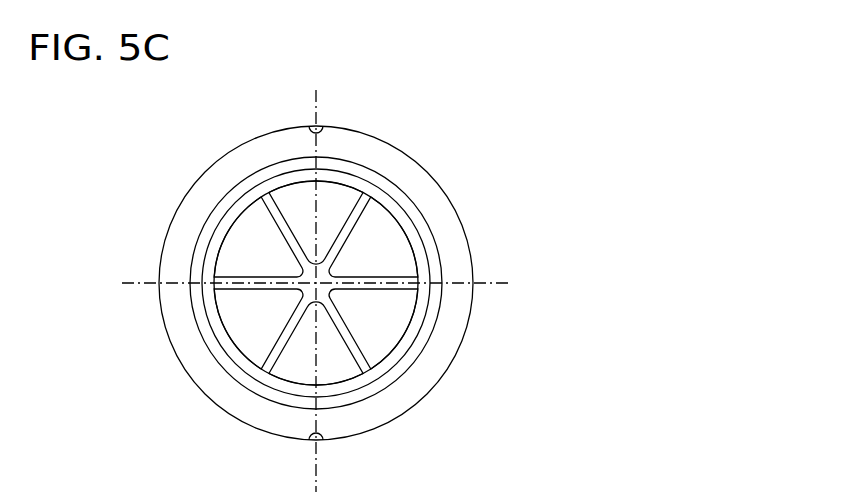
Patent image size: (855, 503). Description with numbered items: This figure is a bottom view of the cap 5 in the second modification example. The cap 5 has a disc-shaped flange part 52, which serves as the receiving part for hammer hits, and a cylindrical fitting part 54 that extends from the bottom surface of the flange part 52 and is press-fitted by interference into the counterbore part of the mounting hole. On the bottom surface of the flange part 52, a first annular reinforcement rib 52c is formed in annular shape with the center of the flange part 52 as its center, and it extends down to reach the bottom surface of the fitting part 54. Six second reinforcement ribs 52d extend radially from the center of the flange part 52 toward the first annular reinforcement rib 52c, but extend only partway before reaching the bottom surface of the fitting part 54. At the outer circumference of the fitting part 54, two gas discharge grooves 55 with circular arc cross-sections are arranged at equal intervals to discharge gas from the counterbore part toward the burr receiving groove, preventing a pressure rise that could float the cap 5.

The cap 5 is at (331, 285).
The flange part 52 is at (331, 247).
The first annular reinforcement rib 52c is at (389, 201).
The second reinforcement ribs 52d is at (340, 323).
The fitting part 54 is at (470, 237).
The gas discharge grooves 55 is at (314, 127).